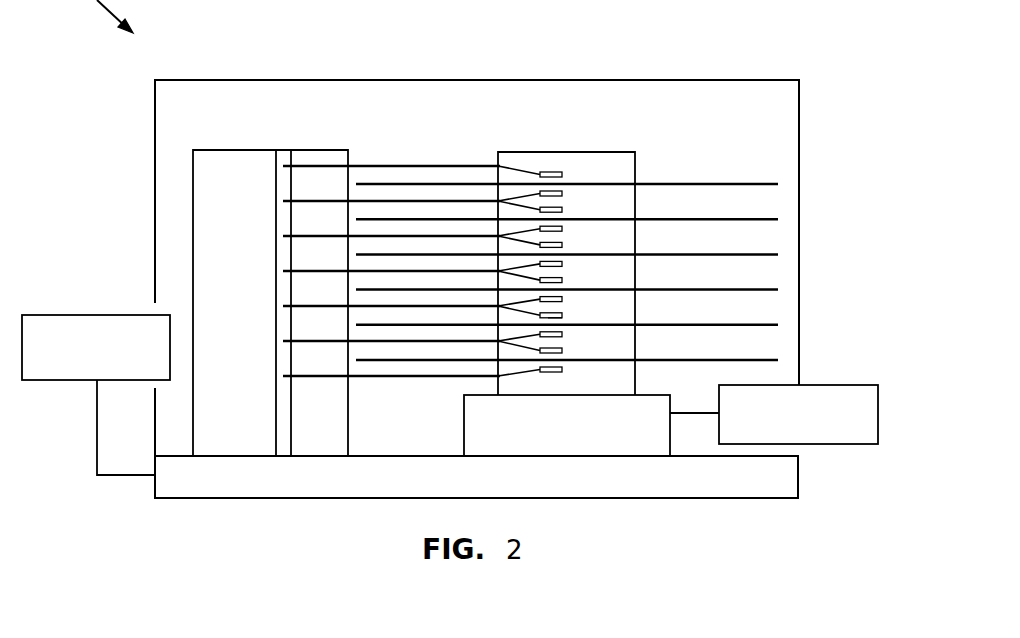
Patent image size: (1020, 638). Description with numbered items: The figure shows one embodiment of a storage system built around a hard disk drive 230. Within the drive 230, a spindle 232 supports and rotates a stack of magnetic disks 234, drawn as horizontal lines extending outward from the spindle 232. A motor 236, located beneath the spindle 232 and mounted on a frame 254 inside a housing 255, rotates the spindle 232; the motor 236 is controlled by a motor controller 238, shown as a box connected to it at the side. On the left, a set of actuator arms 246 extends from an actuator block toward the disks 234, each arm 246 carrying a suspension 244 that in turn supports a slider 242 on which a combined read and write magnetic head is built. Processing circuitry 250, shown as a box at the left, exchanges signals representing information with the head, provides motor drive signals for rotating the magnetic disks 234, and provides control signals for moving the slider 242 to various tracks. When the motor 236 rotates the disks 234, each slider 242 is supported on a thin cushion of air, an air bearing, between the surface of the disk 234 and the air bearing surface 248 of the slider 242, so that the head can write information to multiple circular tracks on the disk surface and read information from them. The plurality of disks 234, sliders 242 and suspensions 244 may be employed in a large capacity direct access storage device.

The hard disk drive 230 is at (603, 244).
The spindle 232 is at (625, 152).
The magnetic disks 234 is at (778, 184).
The motor 236 is at (612, 436).
The motor controller 238 is at (837, 445).
The slider 242 is at (548, 196).
The suspension 244 is at (528, 195).
The actuator arm 246 is at (462, 201).
The air bearing surface 248 is at (548, 322).
The processing circuitry 250 is at (67, 315).
The frame 254 is at (210, 498).
The housing 255 is at (738, 80).